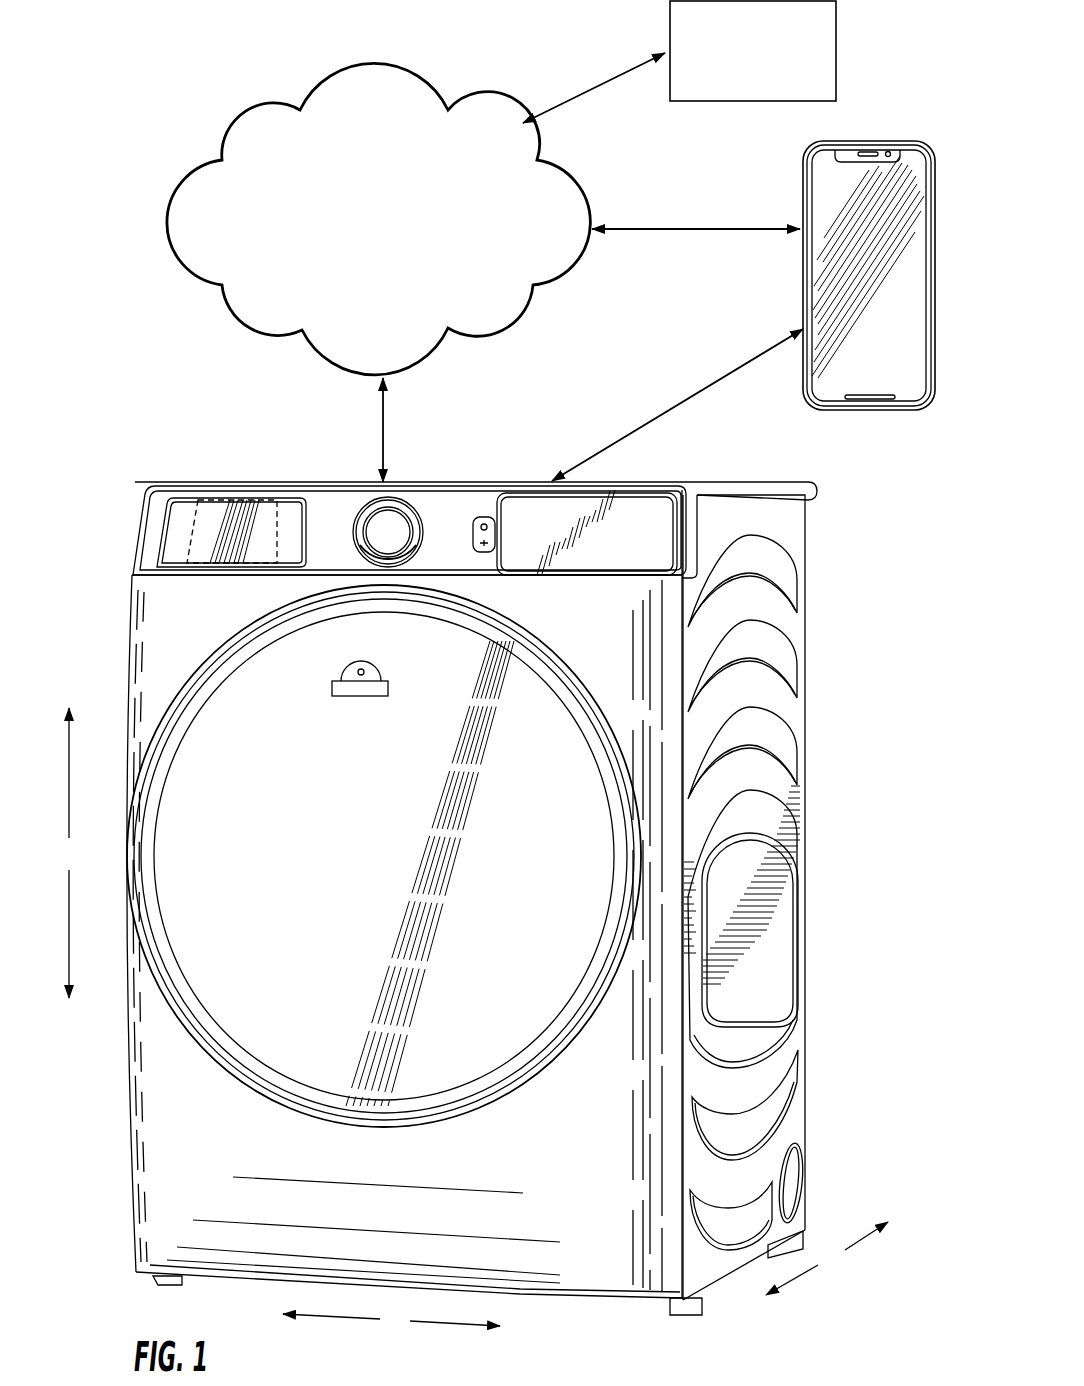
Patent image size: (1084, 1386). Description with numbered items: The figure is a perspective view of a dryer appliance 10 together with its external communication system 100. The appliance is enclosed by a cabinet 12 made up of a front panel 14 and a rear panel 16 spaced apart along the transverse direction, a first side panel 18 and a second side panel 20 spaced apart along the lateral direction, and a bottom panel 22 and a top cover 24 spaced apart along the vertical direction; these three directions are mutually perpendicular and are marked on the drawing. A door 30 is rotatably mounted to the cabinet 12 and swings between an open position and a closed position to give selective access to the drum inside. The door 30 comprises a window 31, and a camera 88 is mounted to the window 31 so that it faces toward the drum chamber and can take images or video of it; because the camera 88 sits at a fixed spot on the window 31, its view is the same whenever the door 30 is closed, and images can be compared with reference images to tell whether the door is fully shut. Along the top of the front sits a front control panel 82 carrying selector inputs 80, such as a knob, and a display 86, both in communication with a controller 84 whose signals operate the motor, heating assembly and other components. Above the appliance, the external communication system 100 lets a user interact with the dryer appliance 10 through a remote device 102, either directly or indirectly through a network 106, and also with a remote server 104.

The external communication system 100 is at (240, 88).
The dryer appliance 10 is at (108, 487).
The cabinet 12 is at (803, 795).
The front panel 14 is at (188, 1178).
The rear panel 16 is at (808, 1035).
The first side panel 18 is at (130, 617).
The second side panel 20 is at (763, 948).
The bottom panel 22 is at (712, 1284).
The top cover 24 is at (748, 482).
The door 30 is at (245, 826).
The window 31 is at (546, 782).
The selector inputs 80 is at (395, 523).
The front control panel 82 is at (335, 512).
The controller 84 is at (190, 520).
The display 86 is at (287, 515).
The camera 88 is at (332, 684).
The remote device 102 is at (845, 340).
The remote server 104 is at (732, 63).
The network 106 is at (358, 233).